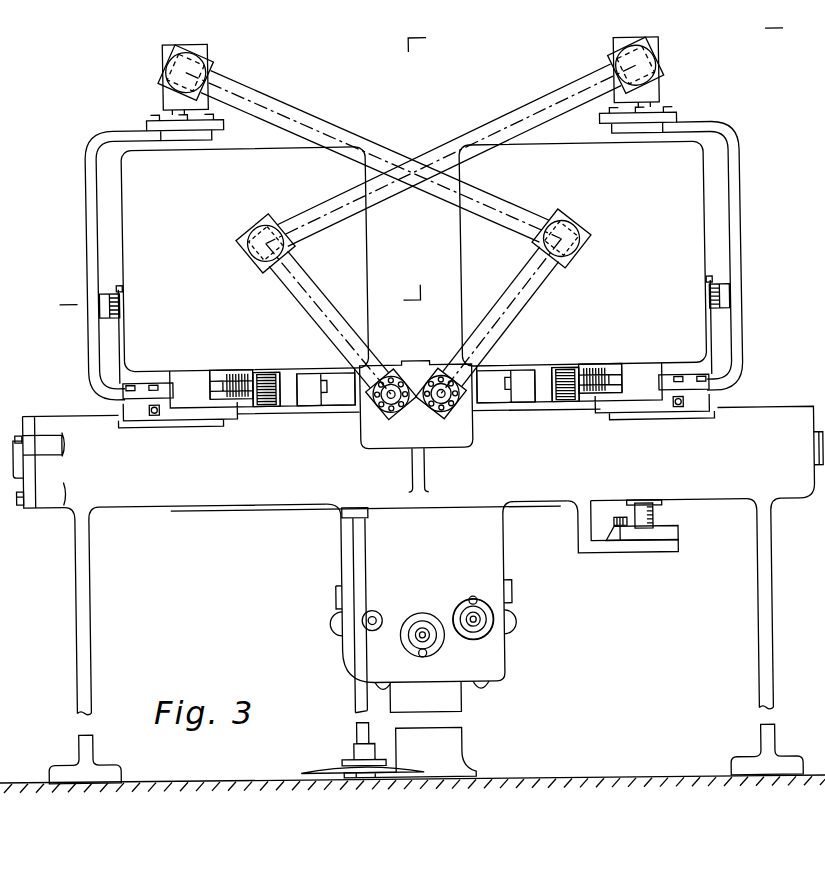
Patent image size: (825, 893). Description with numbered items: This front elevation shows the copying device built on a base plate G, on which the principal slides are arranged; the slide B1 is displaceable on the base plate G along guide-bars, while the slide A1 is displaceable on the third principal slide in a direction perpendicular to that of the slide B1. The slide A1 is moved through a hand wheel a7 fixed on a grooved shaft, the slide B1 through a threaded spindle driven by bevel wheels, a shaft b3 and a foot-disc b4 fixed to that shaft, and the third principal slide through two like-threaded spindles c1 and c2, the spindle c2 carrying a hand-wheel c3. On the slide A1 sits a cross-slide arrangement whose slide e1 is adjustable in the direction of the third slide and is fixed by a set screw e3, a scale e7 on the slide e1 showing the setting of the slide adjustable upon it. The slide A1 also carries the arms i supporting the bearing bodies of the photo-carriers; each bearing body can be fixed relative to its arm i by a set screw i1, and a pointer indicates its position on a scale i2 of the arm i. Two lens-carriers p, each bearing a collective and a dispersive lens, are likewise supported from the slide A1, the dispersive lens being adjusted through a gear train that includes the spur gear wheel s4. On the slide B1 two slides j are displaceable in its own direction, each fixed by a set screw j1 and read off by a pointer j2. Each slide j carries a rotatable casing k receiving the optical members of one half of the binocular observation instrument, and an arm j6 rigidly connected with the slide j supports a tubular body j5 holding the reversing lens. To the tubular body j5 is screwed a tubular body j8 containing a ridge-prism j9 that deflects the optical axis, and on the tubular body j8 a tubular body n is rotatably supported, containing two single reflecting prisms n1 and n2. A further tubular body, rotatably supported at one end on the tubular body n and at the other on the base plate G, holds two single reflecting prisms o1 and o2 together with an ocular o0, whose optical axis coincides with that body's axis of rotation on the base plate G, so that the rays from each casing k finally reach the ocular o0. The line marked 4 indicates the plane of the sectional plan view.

The single reflecting prism n1 is at (674, 57).
The tubular body j8 is at (214, 54).
The ridge-prism j9 is at (685, 85).
The tubular body j5 is at (698, 106).
The tubular body n is at (332, 123).
The single reflecting prism n2 is at (281, 211).
The single reflecting prism o1 is at (598, 238).
The casing k is at (414, 256).
The arm j6 is at (762, 254).
The set screw i1 is at (124, 286).
The scale i2 is at (720, 314).
The arm i is at (130, 368).
The set screw j1 is at (232, 380).
The lens-carrier p is at (318, 381).
The spur gear wheel s4 is at (560, 405).
The single reflecting prism o2 is at (489, 424).
The ocular o0 is at (396, 406).
The pointer j2 is at (698, 430).
The slide j is at (229, 416).
The slide B1 is at (762, 398).
The base plate G is at (422, 619).
The slide A1 is at (579, 535).
The set screw e3 is at (617, 527).
The scale e7 is at (654, 518).
The slide e1 is at (658, 535).
The shaft b3 is at (355, 557).
The spindle c1 is at (374, 613).
The spindle c2 is at (466, 617).
The hand-wheel c3 is at (476, 637).
The hand wheel a7 is at (406, 638).
The foot-disc b4 is at (323, 768).
The section line 4 is at (412, 170).